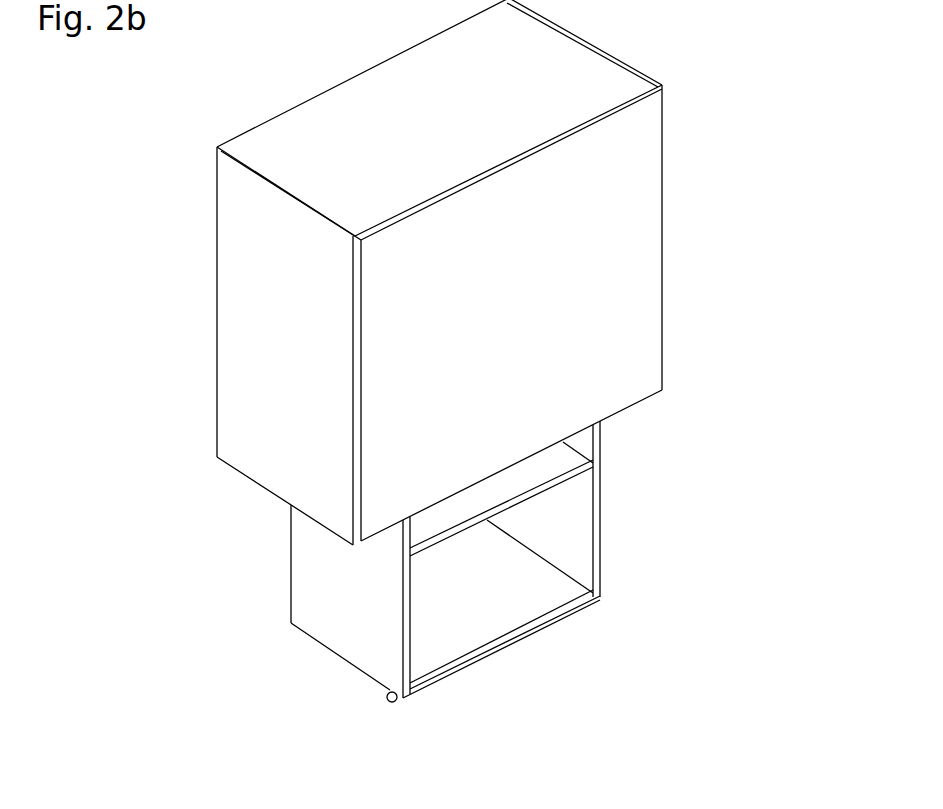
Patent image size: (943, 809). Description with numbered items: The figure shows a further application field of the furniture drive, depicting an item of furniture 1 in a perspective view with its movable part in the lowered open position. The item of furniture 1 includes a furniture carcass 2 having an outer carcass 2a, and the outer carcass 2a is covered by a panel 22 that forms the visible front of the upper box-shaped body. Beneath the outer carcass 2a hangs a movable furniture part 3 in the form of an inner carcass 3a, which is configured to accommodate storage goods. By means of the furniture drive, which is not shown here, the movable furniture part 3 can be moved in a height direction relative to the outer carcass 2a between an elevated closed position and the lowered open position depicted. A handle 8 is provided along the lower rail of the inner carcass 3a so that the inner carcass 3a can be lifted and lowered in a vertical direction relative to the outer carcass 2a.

The item of furniture 1 is at (700, 114).
The furniture carcass 2 is at (195, 425).
The outer carcass 2a is at (248, 447).
The panel 22 is at (642, 247).
The movable furniture part 3 is at (530, 569).
The inner carcass 3a is at (593, 510).
The handle 8 is at (513, 645).